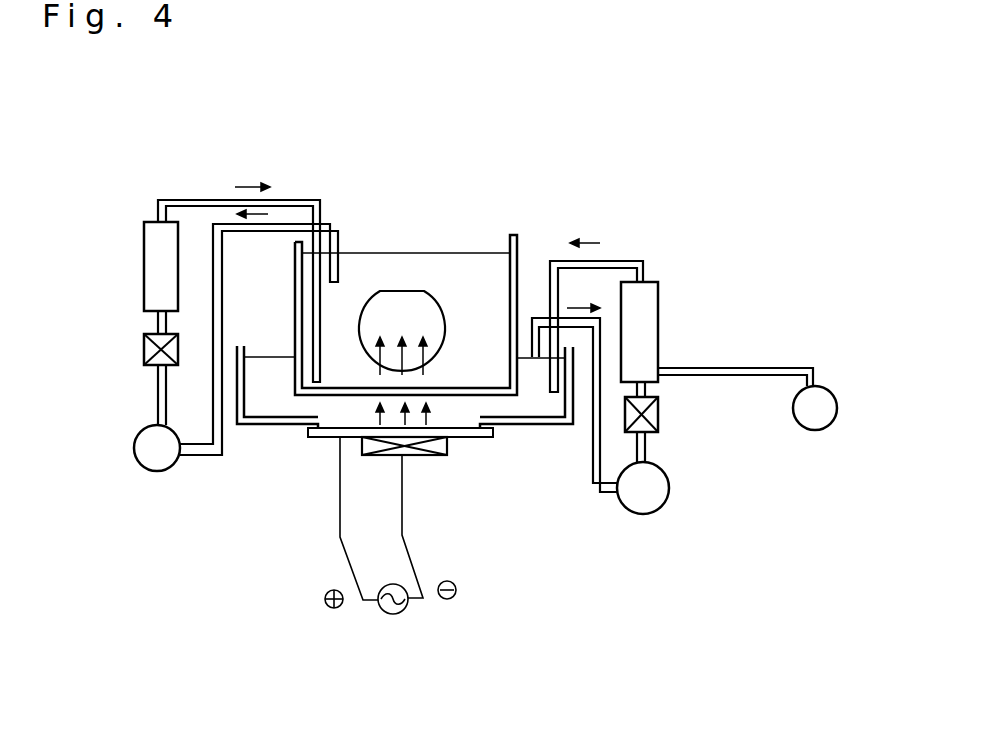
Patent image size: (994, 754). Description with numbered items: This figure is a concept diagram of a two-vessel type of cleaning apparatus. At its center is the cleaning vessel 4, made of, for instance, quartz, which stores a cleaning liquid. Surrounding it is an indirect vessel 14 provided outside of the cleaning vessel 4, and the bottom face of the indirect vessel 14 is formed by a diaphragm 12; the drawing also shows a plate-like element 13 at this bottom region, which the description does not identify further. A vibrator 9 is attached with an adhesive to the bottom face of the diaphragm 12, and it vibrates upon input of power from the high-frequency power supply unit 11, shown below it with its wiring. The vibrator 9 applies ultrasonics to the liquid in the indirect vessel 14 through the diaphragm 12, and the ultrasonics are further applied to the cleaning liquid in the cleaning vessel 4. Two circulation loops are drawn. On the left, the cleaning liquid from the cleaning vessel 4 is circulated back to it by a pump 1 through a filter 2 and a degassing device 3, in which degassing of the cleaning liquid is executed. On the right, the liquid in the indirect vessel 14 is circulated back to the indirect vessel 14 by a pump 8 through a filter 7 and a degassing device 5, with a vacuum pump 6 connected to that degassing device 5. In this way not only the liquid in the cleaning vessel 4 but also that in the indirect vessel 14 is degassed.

The pump for circulation 1 is at (134, 448).
The filter 2 is at (144, 350).
The degassing device 3 is at (144, 258).
The cleaning vessel 4 is at (518, 246).
The degassing device 5 is at (660, 295).
The vacuum pump 6 is at (837, 408).
The filter 7 is at (660, 412).
The pump for circulation 8 is at (672, 490).
The vibrator 9 is at (447, 442).
The high-frequency power supply unit 11 is at (398, 613).
The diaphragm 12 is at (317, 438).
The partition plate 13 is at (307, 428).
The indirect vessel 14 is at (247, 425).